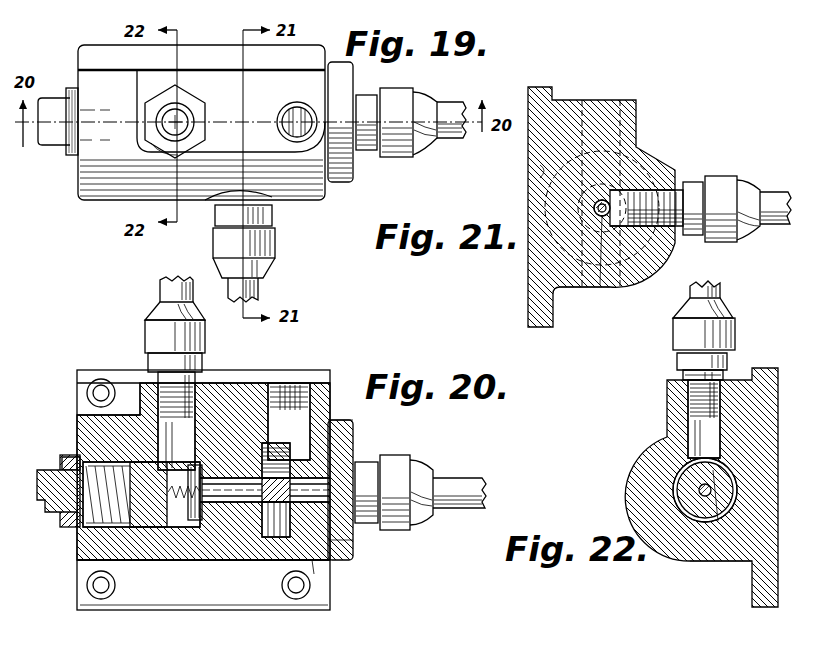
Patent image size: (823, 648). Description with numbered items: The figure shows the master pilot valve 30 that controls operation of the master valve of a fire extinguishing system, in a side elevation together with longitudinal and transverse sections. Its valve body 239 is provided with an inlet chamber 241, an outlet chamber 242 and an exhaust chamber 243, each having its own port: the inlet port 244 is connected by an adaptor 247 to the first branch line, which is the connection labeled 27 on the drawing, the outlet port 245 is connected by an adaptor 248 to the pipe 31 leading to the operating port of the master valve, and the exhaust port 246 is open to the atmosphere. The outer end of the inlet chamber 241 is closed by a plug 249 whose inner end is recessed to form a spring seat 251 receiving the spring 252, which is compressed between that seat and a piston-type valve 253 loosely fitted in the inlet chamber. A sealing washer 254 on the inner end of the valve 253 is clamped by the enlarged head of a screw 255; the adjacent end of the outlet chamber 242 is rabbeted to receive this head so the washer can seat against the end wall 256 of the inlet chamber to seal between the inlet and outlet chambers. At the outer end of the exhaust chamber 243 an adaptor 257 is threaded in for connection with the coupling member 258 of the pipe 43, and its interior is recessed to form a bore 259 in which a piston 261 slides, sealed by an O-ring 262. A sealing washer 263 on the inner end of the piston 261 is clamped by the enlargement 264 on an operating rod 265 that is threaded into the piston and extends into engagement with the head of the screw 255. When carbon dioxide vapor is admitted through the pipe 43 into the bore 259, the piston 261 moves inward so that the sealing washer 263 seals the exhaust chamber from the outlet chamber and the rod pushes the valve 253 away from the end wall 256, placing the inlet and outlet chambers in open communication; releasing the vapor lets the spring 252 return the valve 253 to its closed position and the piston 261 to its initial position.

In FIG. 19, the pipe 27 is at (191, 111).
In FIG. 20, the pipe 27 is at (159, 289).
In FIG. 22, the pipe 27 is at (722, 292).
In FIG. 19, the master pilot valve 30 is at (289, 201).
In FIG. 21, the master pilot valve 30 is at (585, 288).
In FIG. 20, the master pilot valve 30 is at (167, 572).
In FIG. 22, the master pilot valve 30 is at (697, 567).
In FIG. 19, the pipe 31 is at (260, 291).
In FIG. 21, the pipe 31 is at (771, 192).
In FIG. 19, the pipe 43 is at (450, 103).
In FIG. 20, the pipe 43 is at (452, 510).
In FIG. 19, the valve body 239 is at (97, 198).
In FIG. 21, the valve body 239 is at (535, 268).
In FIG. 20, the valve body 239 is at (236, 562).
In FIG. 22, the valve body 239 is at (639, 466).
In FIG. 20, the inlet chamber 241 is at (193, 455).
In FIG. 22, the inlet chamber 241 is at (720, 528).
In FIG. 21, the outlet chamber 242 is at (602, 218).
In FIG. 20, the outlet chamber 242 is at (228, 504).
In FIG. 20, the exhaust chamber 243 is at (258, 504).
In FIG. 20, the inlet port 244 is at (112, 442).
In FIG. 22, the inlet port 244 is at (698, 433).
In FIG. 21, the outlet port 245 is at (628, 186).
In FIG. 19, the exhaust port 246 is at (279, 133).
In FIG. 21, the exhaust port 246 is at (642, 133).
In FIG. 20, the exhaust port 246 is at (300, 430).
In FIG. 19, the adaptor 247 is at (146, 141).
In FIG. 20, the adaptor 247 is at (147, 336).
In FIG. 22, the adaptor 247 is at (737, 336).
In FIG. 19, the adaptor 248 is at (270, 252).
In FIG. 21, the adaptor 248 is at (722, 177).
In FIG. 19, the plug 249 is at (53, 141).
In FIG. 20, the plug 249 is at (47, 505).
In FIG. 20, the spring seat 251 is at (75, 462).
In FIG. 20, the spring 252 is at (70, 524).
In FIG. 20, the piston-type valve 253 is at (158, 528).
In FIG. 22, the piston-type valve 253 is at (693, 513).
In FIG. 20, the sealing washer 254 is at (190, 522).
In FIG. 20, the screw 255 is at (214, 476).
In FIG. 22, the screw 255 is at (699, 490).
In FIG. 20, the end wall 256 is at (190, 522).
In FIG. 19, the adaptor 257 is at (354, 172).
In FIG. 21, the adaptor 257 is at (540, 172).
In FIG. 20, the adaptor 257 is at (354, 549).
In FIG. 19, the coupling member 258 is at (401, 152).
In FIG. 20, the coupling member 258 is at (405, 470).
In FIG. 20, the bore 259 is at (356, 525).
In FIG. 20, the piston 261 is at (346, 456).
In FIG. 20, the O-ring 262 is at (330, 560).
In FIG. 20, the sealing washer 263 is at (316, 572).
In FIG. 20, the enlargement 264 is at (264, 466).
In FIG. 21, the operating rod 265 is at (594, 207).
In FIG. 20, the operating rod 265 is at (266, 504).